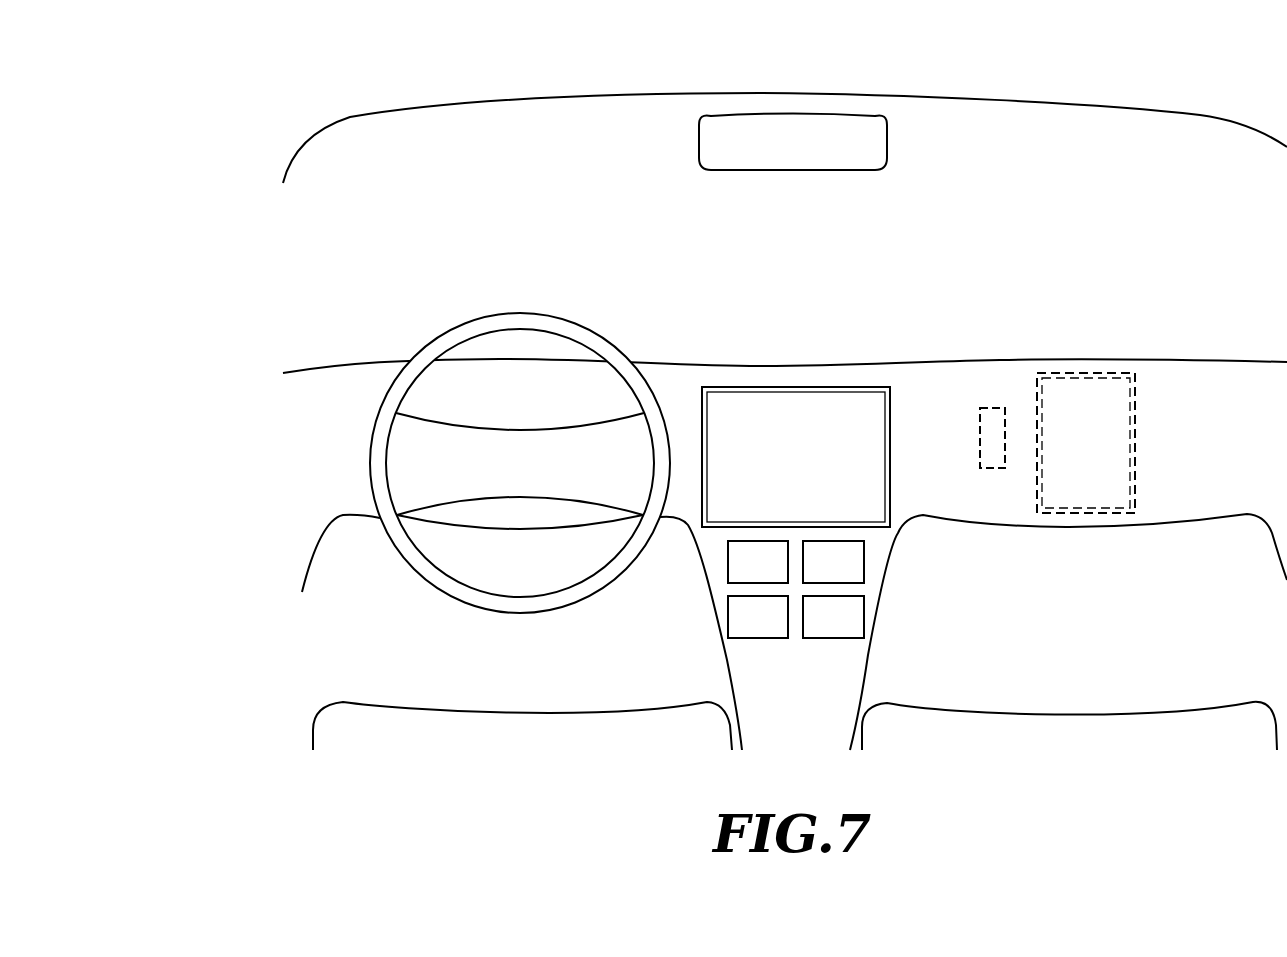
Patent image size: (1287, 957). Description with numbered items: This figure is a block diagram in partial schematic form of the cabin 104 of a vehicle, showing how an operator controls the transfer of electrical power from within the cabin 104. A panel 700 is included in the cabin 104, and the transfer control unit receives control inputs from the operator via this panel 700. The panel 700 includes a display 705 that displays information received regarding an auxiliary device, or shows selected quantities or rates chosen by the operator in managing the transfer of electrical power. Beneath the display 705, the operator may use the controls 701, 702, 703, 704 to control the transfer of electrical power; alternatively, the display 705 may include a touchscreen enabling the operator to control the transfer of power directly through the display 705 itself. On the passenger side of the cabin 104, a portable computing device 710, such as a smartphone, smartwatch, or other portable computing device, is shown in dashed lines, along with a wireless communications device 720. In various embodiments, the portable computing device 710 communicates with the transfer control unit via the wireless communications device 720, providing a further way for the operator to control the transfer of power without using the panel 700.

The cabin 104 is at (266, 110).
The panel 700 is at (756, 338).
The control 701 is at (740, 578).
The control 702 is at (815, 578).
The control 703 is at (740, 633).
The control 704 is at (815, 633).
The display 705 is at (777, 499).
The portable computing device 710 is at (1068, 487).
The wireless communications device 720 is at (992, 418).